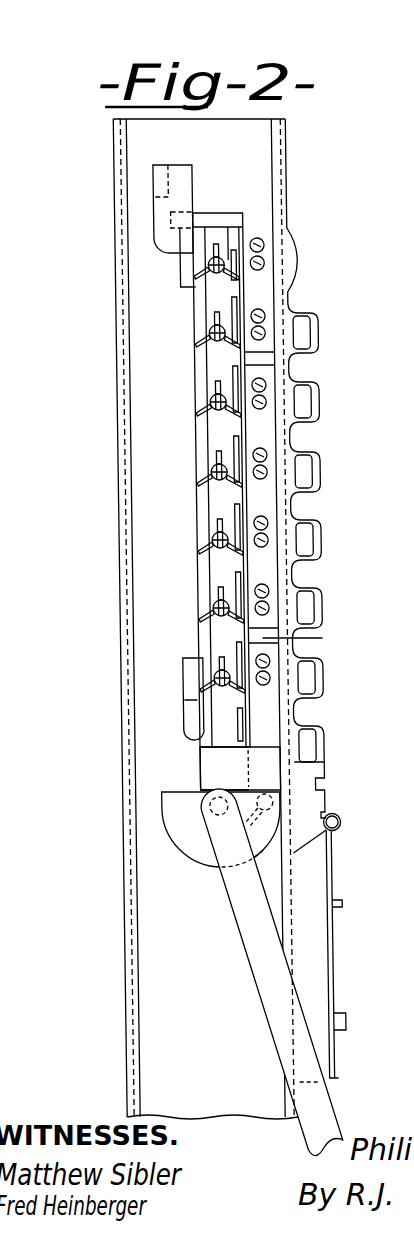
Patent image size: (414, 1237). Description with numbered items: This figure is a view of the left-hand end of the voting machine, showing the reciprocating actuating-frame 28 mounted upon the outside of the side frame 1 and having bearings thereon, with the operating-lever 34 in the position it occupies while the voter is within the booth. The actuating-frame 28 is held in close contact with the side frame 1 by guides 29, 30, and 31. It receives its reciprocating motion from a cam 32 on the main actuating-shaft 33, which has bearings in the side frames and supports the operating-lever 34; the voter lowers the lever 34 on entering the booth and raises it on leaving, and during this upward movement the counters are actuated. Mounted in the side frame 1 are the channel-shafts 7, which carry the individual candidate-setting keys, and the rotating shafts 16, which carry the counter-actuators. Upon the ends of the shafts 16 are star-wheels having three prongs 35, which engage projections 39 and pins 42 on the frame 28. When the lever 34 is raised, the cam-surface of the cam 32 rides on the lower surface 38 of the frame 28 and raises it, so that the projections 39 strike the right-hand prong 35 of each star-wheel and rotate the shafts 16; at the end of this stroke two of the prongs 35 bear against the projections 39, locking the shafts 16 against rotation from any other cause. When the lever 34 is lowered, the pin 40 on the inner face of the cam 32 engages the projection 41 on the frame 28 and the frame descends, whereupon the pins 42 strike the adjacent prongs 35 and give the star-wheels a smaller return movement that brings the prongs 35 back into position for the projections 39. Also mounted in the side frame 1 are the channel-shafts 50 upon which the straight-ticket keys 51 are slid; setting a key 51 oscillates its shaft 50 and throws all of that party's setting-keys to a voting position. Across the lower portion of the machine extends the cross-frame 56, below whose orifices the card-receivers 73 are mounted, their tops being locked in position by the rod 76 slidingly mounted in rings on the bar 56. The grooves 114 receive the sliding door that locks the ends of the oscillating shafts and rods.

The side frame 1 is at (263, 619).
The channel-shaft 7 is at (263, 479).
The rotating shaft 16 is at (211, 327).
The reciprocating actuating-frame 28 is at (232, 228).
The guide 29 is at (178, 248).
The guide 30 is at (191, 702).
The guide 31 is at (305, 640).
The cam 32 is at (221, 829).
The main actuating-shaft 33 is at (217, 817).
The operating-lever 34 is at (257, 972).
The prong 35 is at (206, 342).
The lower surface 38 is at (230, 779).
The projection 39 is at (239, 315).
The pin 40 is at (263, 802).
The projection 41 is at (257, 850).
The pin 42 is at (206, 337).
The channel-shaft 50 is at (263, 385).
The straight-ticket key 51 is at (321, 322).
The cross-frame 56 is at (323, 772).
The card-receiver 73 is at (328, 872).
The rod 76 is at (338, 822).
The grooves 114 is at (120, 478).